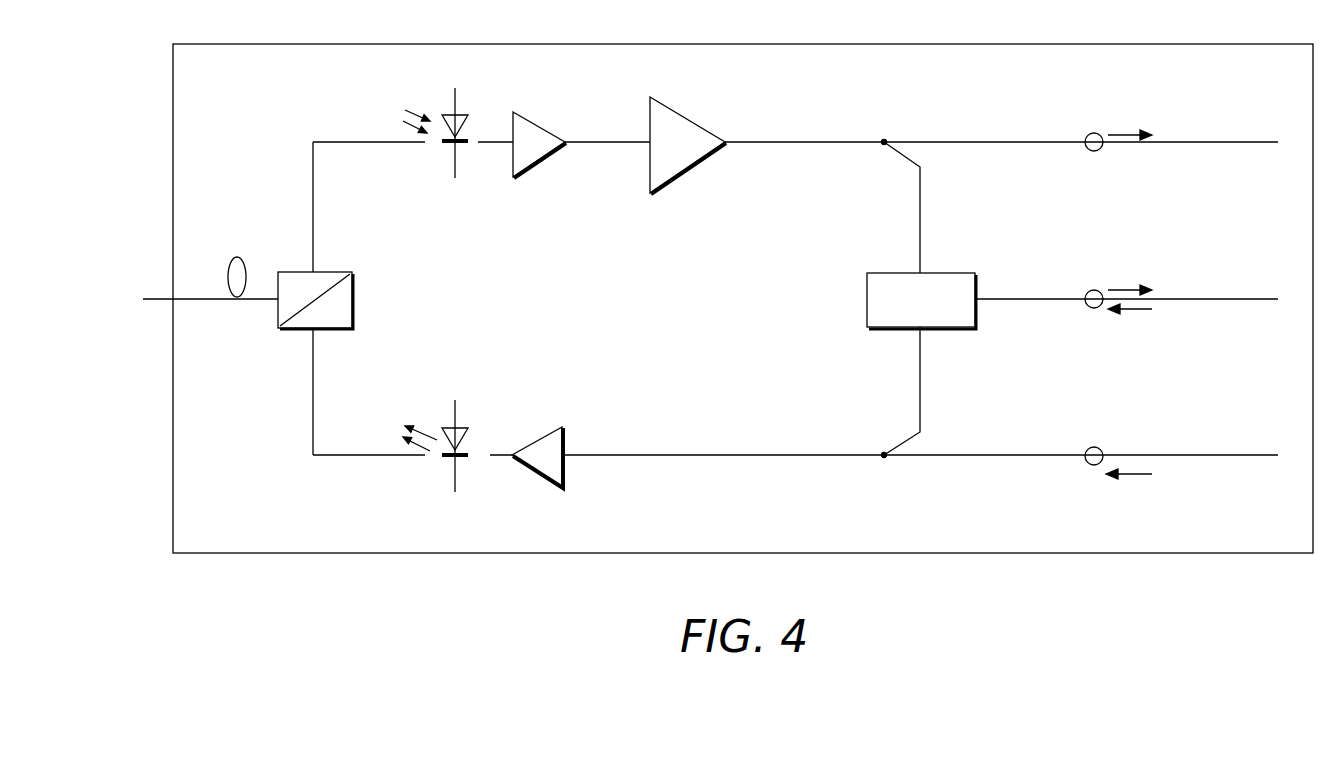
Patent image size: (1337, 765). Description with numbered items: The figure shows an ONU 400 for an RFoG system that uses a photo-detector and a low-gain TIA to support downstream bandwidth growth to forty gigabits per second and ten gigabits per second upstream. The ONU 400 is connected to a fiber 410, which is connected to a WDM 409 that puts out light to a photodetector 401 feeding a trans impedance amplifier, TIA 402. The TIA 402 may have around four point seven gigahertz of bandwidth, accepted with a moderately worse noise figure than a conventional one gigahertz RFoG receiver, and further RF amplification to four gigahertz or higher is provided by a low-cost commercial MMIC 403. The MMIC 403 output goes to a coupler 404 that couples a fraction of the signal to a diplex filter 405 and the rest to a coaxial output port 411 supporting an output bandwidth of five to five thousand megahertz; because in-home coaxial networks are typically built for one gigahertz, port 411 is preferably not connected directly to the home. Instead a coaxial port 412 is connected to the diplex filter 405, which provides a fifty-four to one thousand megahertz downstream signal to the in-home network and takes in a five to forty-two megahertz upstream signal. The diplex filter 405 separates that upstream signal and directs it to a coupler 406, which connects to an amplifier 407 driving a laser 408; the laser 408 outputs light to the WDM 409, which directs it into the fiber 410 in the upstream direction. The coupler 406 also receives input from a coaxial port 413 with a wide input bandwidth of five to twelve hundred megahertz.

The ONU 400 is at (743, 298).
The photodetector 401 is at (462, 110).
The trans impedance amplifier (TIA) 402 is at (537, 122).
The MMIC 403 is at (685, 113).
The coupler 404 is at (887, 139).
The diplex filter 405 is at (955, 272).
The coupler 406 is at (886, 460).
The amplifier 407 is at (537, 473).
The laser 408 is at (460, 428).
The WDM 409 is at (333, 270).
The fiber 410 is at (238, 297).
The coaxial output port 411 is at (1092, 133).
The coaxial port 412 is at (1092, 290).
The coaxial port 413 is at (1092, 447).